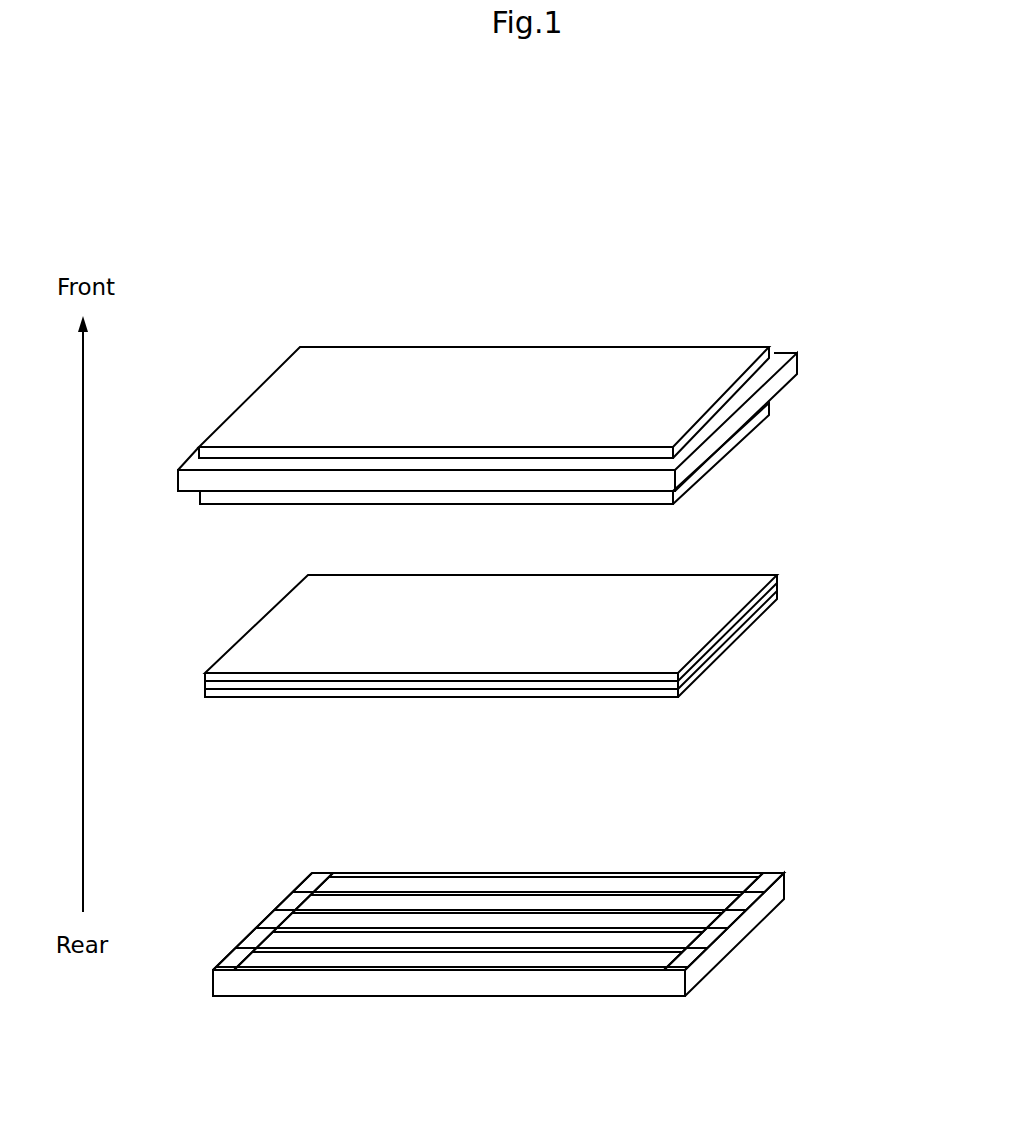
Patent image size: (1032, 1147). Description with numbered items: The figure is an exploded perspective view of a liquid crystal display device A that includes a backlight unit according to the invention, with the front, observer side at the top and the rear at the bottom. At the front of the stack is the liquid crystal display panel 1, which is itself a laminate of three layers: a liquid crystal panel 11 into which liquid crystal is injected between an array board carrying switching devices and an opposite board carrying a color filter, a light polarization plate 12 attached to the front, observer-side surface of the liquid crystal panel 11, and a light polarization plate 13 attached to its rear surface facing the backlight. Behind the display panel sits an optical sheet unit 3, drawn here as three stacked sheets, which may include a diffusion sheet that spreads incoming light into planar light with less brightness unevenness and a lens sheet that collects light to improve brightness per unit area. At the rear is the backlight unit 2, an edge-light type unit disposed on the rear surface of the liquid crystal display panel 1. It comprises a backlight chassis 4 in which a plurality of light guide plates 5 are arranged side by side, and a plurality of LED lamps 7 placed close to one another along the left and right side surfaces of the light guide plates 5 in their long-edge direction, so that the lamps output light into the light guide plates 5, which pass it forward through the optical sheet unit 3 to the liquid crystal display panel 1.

The liquid crystal display device A is at (298, 263).
The liquid crystal display panel 1 is at (877, 305).
The light polarization plate 12 is at (748, 363).
The liquid crystal panel 11 is at (777, 380).
The light polarization plate 13 is at (738, 437).
The optical sheet unit 3 is at (782, 563).
The backlight unit 2 is at (724, 868).
The backlight chassis 4 is at (538, 986).
The light guide plates 5 is at (635, 958).
The LED lamps 7 is at (305, 882).